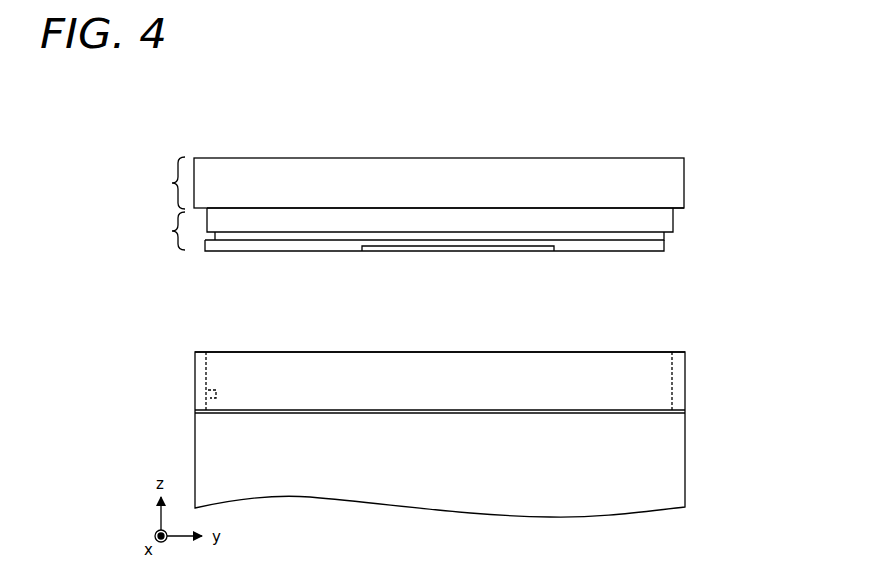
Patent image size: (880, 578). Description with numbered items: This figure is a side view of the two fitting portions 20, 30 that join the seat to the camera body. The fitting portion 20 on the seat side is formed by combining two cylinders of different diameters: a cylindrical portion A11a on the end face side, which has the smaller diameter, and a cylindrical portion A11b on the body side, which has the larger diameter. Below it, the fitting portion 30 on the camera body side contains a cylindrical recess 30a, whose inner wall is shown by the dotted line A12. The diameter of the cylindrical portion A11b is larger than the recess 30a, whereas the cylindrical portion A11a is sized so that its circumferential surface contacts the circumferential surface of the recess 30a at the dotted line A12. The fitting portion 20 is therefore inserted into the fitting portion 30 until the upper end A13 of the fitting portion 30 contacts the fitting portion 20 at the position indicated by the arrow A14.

The fitting portion 20 is at (684, 190).
The fitting portion 30 is at (686, 380).
The recess 30a is at (474, 371).
The cylindrical portion A11a is at (391, 229).
The cylindrical portion A11b is at (147, 183).
The dotted line A12 is at (206, 368).
The upper end A13 is at (360, 352).
The arrow A14 is at (690, 209).